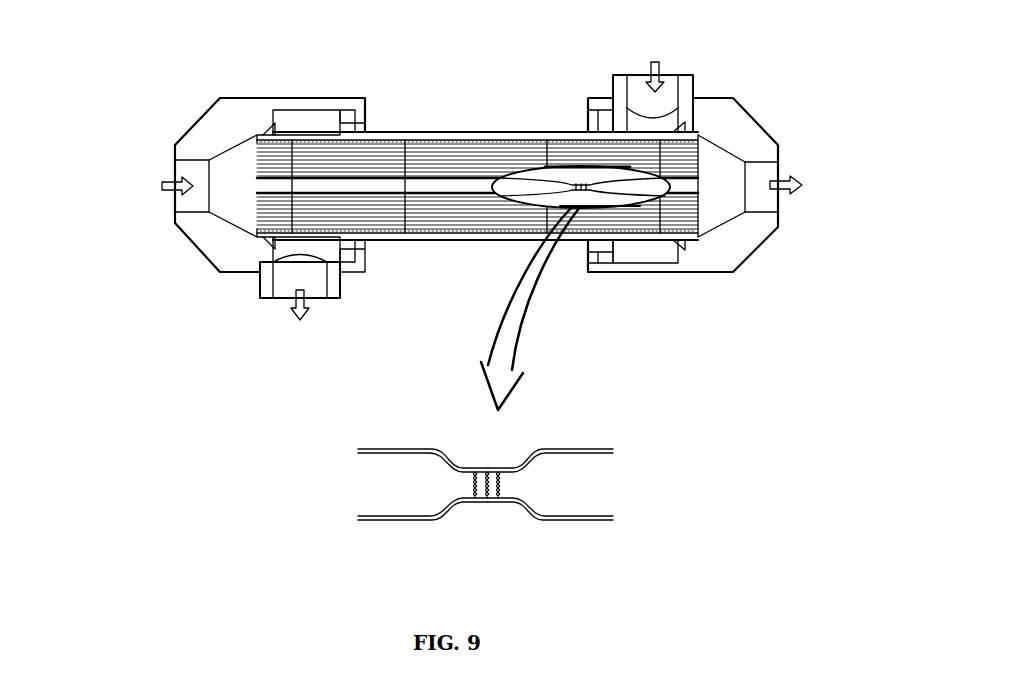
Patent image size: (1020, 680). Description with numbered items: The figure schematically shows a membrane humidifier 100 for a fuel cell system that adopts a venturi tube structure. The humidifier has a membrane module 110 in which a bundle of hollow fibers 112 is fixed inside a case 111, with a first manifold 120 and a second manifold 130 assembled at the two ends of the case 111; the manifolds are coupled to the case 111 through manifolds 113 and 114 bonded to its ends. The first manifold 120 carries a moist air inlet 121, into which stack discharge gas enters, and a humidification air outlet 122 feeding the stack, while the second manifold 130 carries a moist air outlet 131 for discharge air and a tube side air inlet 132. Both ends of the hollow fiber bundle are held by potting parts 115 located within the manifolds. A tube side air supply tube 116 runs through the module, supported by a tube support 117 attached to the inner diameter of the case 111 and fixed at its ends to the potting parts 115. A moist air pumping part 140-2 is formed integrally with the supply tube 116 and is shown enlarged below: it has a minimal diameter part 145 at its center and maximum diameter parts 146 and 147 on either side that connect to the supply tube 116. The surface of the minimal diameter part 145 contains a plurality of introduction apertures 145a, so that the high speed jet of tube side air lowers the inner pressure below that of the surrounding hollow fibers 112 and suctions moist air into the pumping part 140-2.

The membrane humidifier 100 is at (274, 80).
The membrane module 110 is at (497, 131).
The case 111 is at (417, 131).
The hollow fibers 112 is at (427, 220).
The manifold 113 is at (647, 239).
The manifold 114 is at (347, 128).
The potting part 115 is at (695, 231).
The tube side air supply tube 116 is at (463, 186).
The tube support 117 is at (547, 148).
The first manifold 120 is at (752, 130).
The moist air inlet 121 is at (688, 86).
The humidification air outlet 122 is at (773, 198).
The second manifold 130 is at (211, 123).
The moist air outlet 131 is at (267, 278).
The tube side air inlet 132 is at (182, 204).
The moist air pumping part 140-2 is at (583, 210).
The minimal diameter part 145 is at (500, 499).
The introduction apertures 145a is at (470, 499).
The maximum diameter part 146 is at (392, 447).
The maximum diameter part 147 is at (596, 447).